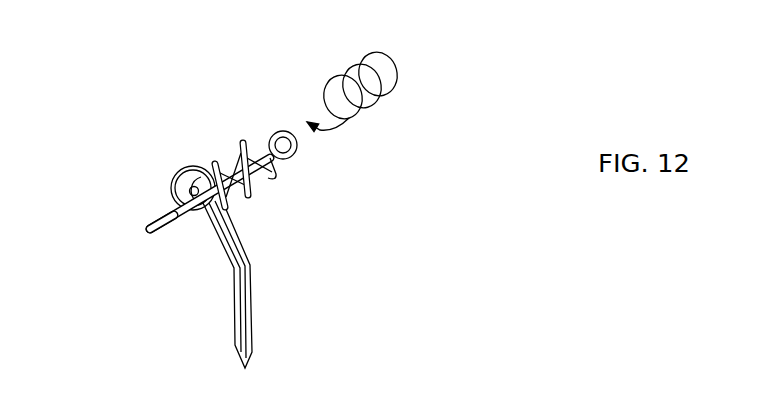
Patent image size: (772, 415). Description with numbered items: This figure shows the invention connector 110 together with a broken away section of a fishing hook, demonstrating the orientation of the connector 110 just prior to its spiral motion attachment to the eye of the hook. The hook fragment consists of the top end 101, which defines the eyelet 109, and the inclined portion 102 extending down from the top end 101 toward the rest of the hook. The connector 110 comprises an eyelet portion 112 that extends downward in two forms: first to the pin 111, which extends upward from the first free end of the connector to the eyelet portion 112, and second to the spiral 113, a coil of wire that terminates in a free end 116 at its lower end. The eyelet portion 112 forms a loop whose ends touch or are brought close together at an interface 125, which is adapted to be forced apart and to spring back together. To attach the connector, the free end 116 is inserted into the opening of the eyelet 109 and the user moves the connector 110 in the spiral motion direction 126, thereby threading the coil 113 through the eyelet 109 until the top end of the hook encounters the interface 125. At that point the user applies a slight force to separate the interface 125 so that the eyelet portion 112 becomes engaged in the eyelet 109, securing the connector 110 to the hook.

The top end 101 is at (168, 185).
The inclined portion 102 is at (233, 233).
The eyelet 109 is at (193, 174).
The connector 110 is at (245, 127).
The pin 111 is at (151, 231).
The eyelet portion 112 is at (298, 150).
The spiral 113 is at (236, 151).
The free end 116 is at (195, 199).
The interface 125 is at (279, 166).
The spiral motion direction 126 is at (357, 120).